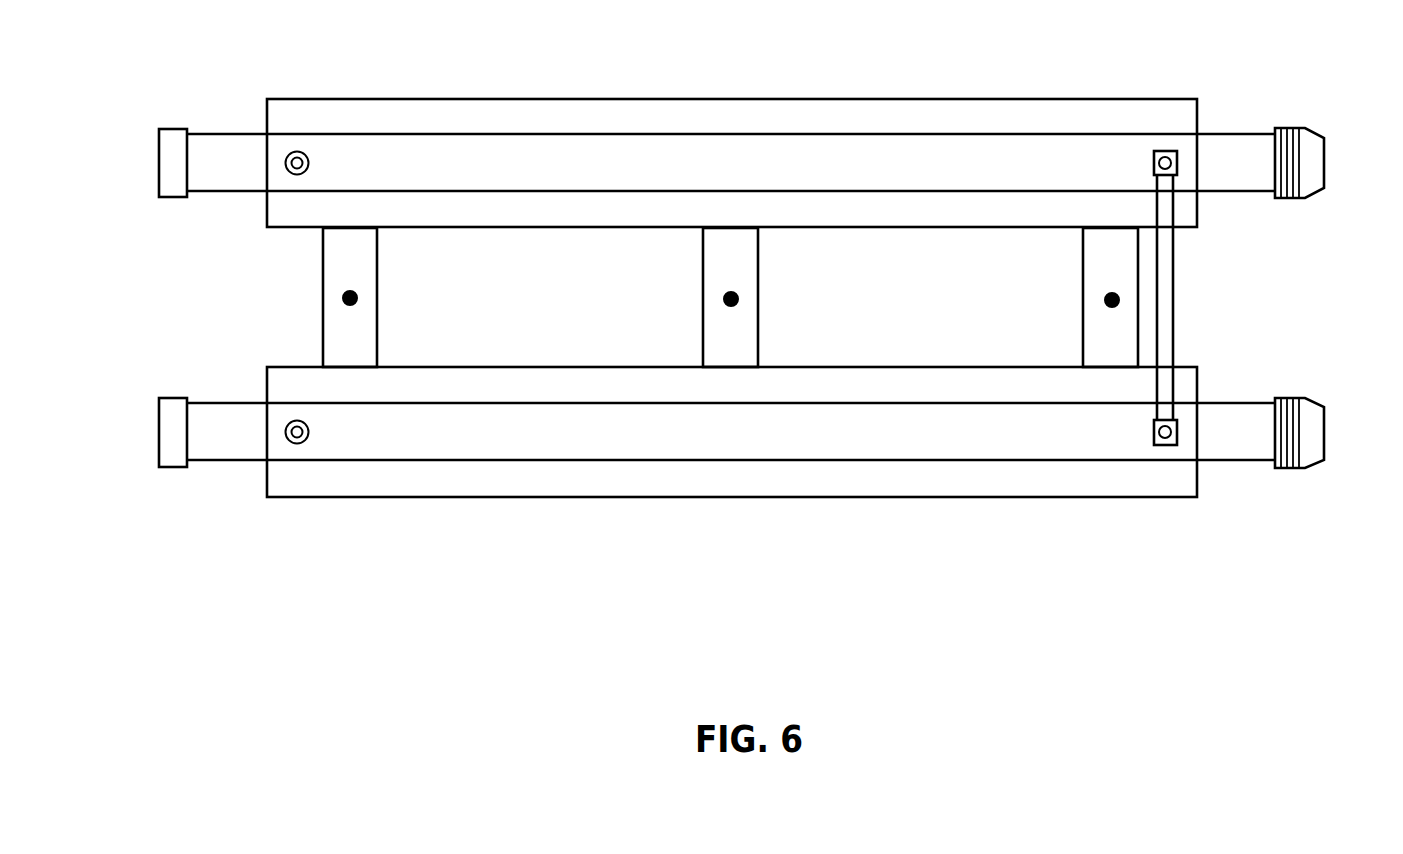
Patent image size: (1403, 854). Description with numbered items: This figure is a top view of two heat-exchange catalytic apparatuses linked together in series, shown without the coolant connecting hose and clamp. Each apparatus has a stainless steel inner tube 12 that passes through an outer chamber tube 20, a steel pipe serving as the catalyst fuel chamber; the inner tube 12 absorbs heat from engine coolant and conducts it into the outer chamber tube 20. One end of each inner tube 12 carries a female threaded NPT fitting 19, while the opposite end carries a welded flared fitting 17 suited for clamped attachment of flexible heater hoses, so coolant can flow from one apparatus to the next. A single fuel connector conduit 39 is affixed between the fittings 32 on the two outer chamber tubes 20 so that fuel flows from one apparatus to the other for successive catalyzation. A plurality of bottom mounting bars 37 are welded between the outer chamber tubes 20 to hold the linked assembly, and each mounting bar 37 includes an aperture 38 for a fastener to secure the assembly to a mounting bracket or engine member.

The inner tube 12 is at (224, 133).
The welded flared fitting 17 is at (1326, 163).
The threaded NPT fitting 19 is at (158, 146).
The outer chamber tube 20 is at (391, 98).
The fitting 32 is at (1165, 447).
The bottom mounting bar 37 is at (702, 299).
The aperture 38 is at (357, 298).
The fuel connector conduit 39 is at (1175, 280).